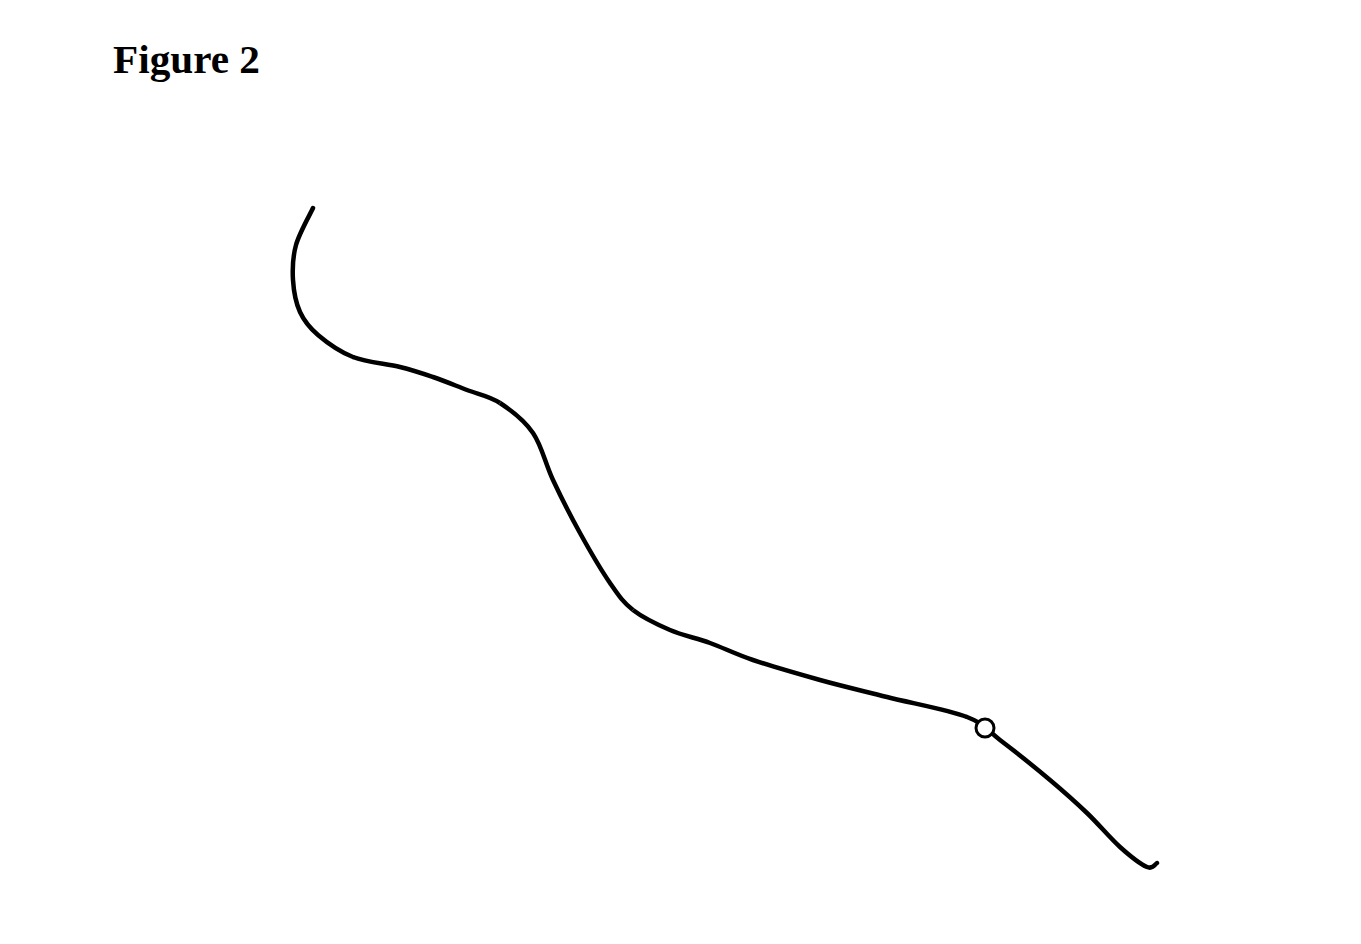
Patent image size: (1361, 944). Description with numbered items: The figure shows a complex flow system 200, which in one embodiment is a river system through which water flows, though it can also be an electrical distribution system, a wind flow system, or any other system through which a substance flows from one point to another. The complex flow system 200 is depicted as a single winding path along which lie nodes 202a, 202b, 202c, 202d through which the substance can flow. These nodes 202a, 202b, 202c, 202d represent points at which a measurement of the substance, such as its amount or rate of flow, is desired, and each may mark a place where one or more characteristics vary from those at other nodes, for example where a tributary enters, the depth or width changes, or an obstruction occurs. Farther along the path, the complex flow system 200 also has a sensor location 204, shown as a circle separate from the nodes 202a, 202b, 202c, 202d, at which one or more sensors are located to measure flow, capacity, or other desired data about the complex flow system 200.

The complex flow system 200 is at (1260, 108).
The node 202a is at (276, 292).
The node 202b is at (424, 358).
The node 202c is at (526, 443).
The node 202d is at (711, 635).
The sensor location 204 is at (988, 716).